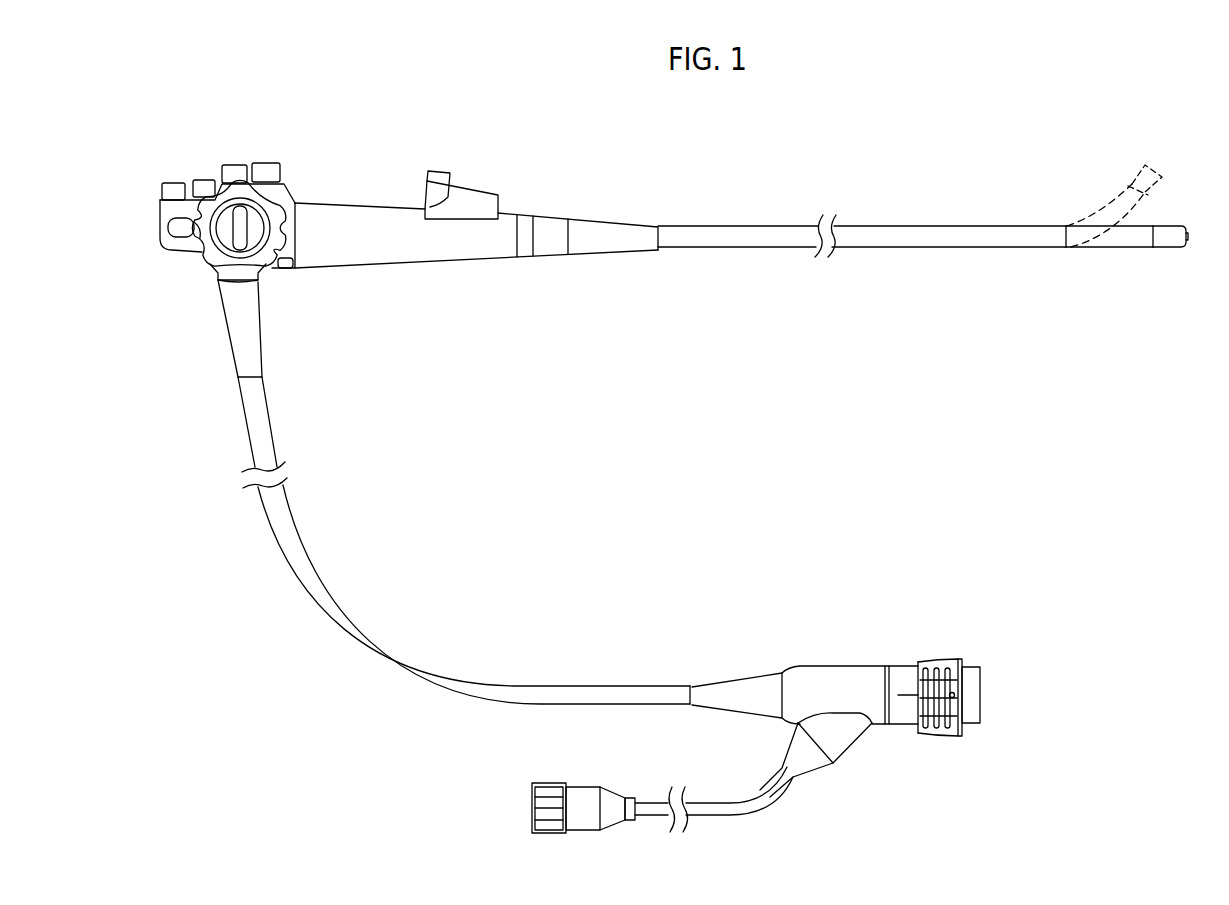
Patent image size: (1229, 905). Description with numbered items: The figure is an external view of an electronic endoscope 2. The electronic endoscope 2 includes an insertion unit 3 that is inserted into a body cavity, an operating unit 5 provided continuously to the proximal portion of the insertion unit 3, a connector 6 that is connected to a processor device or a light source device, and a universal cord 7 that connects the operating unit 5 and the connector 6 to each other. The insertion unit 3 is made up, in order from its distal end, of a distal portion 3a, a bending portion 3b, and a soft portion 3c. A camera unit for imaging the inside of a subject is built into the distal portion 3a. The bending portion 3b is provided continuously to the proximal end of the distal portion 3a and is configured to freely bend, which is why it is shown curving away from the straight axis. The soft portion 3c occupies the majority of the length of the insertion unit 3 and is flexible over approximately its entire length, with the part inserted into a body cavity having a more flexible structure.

The electronic endoscope 2 is at (530, 192).
The insertion unit 3 is at (1199, 283).
The distal portion 3a is at (1180, 249).
The bending portion 3b is at (1113, 249).
The soft portion 3c is at (880, 248).
The operating unit 5 is at (400, 257).
The connector 6 is at (862, 675).
The universal cord 7 is at (320, 599).